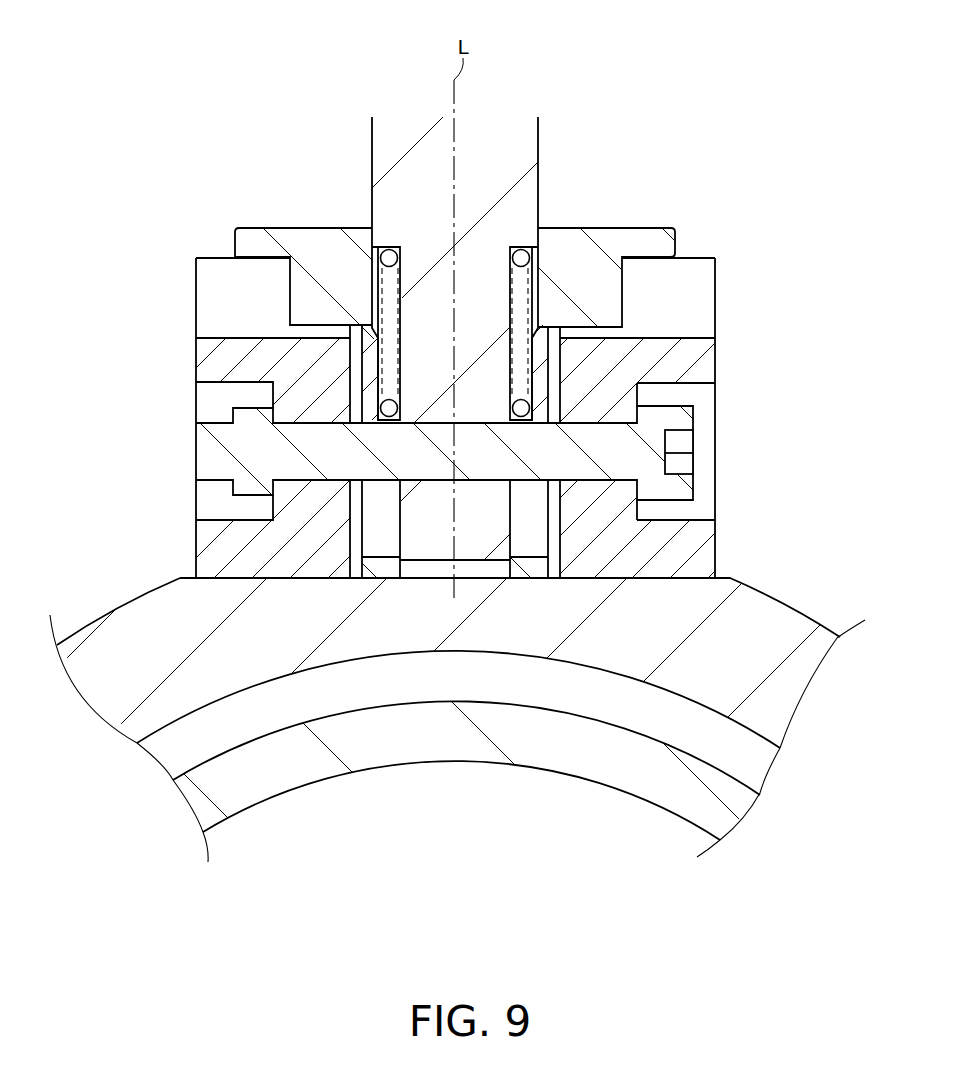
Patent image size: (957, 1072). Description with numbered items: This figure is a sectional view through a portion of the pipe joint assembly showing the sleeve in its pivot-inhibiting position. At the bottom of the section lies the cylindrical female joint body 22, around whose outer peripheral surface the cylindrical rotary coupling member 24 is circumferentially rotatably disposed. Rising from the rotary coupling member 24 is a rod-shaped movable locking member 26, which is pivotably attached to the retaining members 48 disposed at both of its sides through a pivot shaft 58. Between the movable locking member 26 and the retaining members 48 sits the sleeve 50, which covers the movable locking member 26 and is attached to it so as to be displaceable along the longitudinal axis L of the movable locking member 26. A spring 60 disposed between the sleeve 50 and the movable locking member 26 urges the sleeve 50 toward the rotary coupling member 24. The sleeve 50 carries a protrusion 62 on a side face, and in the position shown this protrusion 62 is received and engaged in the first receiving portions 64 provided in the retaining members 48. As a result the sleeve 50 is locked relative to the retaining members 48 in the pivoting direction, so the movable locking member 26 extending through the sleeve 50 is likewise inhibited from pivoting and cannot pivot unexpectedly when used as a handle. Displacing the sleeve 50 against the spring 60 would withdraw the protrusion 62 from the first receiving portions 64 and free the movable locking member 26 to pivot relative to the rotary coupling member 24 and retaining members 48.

The female joint body 22 is at (703, 797).
The rotary coupling member 24 is at (755, 632).
The movable locking member 26 is at (512, 140).
The retaining members 48 is at (663, 362).
The sleeve 50 is at (478, 586).
The pivot shaft 58 is at (620, 451).
The spring 60 is at (390, 297).
The protrusion 62 is at (597, 280).
The first receiving portions 64 is at (657, 310).